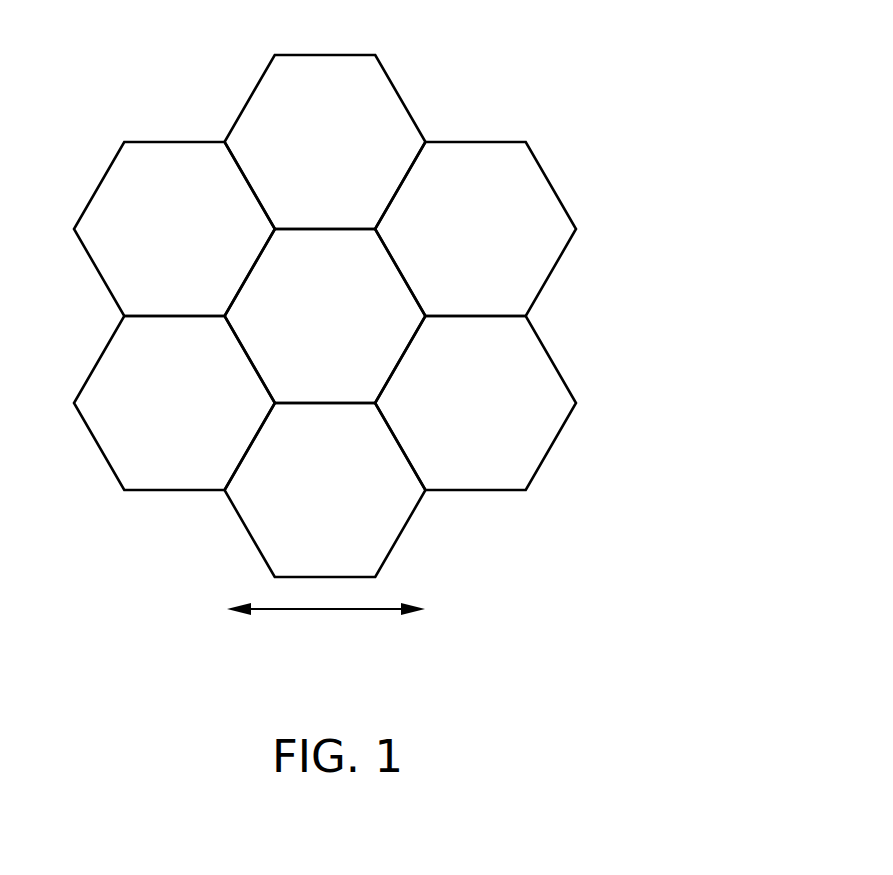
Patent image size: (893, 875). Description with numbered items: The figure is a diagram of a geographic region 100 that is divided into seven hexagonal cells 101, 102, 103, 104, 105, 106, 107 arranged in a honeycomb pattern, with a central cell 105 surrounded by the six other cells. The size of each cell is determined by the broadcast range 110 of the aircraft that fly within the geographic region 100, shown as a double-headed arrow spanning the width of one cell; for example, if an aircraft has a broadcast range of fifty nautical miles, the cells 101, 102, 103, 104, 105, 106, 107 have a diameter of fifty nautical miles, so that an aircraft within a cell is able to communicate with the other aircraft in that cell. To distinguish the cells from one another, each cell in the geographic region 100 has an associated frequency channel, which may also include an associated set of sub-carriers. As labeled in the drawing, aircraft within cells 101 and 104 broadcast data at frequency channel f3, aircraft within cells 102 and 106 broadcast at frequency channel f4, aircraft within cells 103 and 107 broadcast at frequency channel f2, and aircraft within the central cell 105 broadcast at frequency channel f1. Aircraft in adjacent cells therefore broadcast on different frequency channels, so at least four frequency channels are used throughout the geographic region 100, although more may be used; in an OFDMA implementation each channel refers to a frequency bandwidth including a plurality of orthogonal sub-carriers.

The geographic region 100 is at (708, 170).
The cell 101 is at (87, 378).
The cell 102 is at (240, 517).
The cell 103 is at (560, 375).
The cell 104 is at (556, 193).
The cell 105 is at (343, 253).
The cell 106 is at (388, 77).
The cell 107 is at (92, 198).
The broadcast range 110 is at (313, 609).